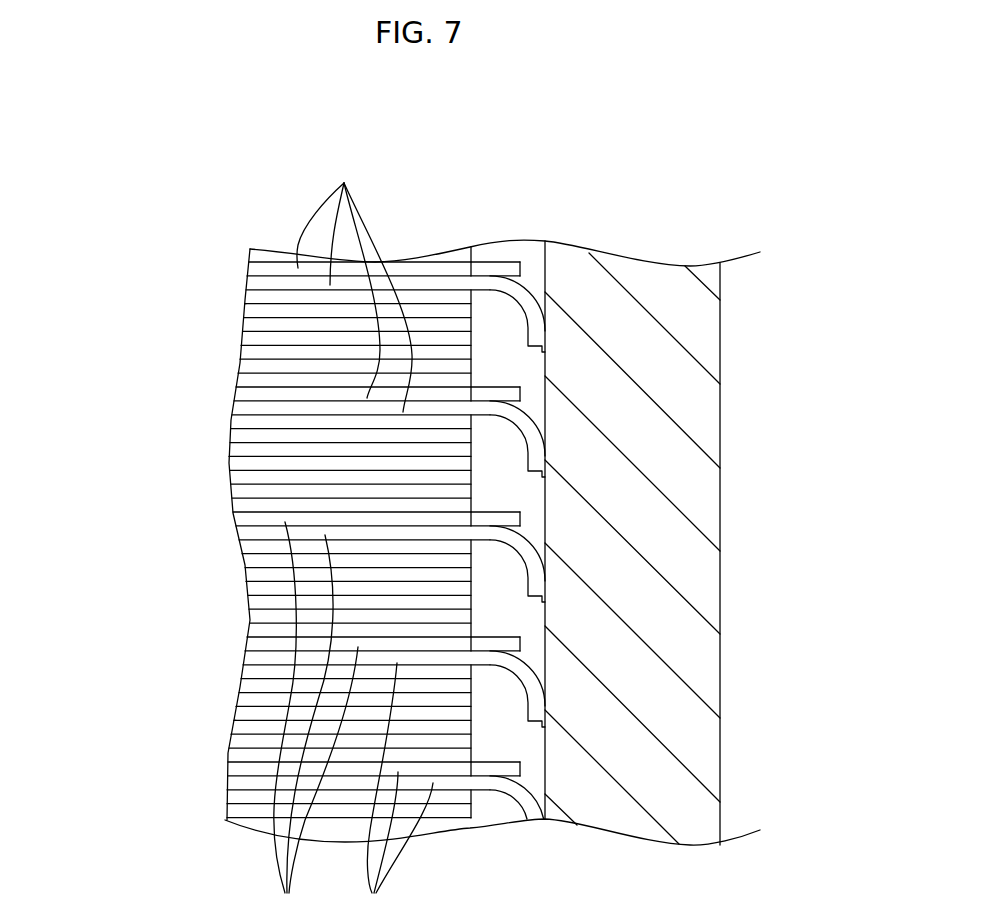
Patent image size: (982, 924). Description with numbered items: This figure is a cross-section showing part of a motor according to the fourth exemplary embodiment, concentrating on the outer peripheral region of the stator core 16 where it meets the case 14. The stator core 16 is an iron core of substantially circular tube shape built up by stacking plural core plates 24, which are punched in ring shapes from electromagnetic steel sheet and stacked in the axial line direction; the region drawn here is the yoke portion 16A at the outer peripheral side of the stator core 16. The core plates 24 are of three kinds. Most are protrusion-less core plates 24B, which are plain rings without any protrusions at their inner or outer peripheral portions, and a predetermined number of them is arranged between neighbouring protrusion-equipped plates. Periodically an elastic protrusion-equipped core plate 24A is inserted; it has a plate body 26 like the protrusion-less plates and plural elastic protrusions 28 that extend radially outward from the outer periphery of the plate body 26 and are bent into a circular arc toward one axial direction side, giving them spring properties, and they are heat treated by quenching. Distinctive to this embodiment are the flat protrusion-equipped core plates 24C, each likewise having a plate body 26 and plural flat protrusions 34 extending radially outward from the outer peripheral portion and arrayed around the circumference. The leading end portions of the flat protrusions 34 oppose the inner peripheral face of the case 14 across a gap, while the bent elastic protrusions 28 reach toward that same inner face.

The case 14 is at (722, 500).
The stator core 16 is at (505, 529).
The yoke portion 16A is at (453, 812).
The core plates 24 is at (349, 534).
The elastic protrusion-equipped core plate 24A is at (250, 283).
The protrusion-less core plate 24B is at (246, 352).
The flat protrusion-equipped core plate 24C is at (250, 268).
The plate body 26 is at (352, 539).
The elastic protrusions 28 is at (545, 292).
The flat protrusions 34 is at (500, 262).